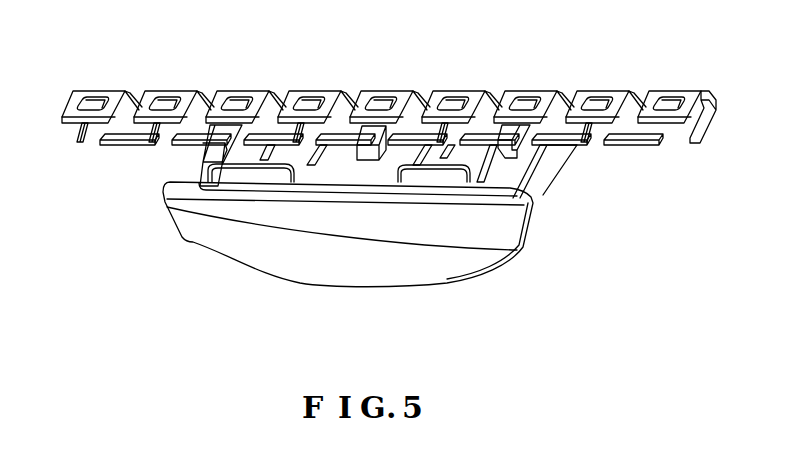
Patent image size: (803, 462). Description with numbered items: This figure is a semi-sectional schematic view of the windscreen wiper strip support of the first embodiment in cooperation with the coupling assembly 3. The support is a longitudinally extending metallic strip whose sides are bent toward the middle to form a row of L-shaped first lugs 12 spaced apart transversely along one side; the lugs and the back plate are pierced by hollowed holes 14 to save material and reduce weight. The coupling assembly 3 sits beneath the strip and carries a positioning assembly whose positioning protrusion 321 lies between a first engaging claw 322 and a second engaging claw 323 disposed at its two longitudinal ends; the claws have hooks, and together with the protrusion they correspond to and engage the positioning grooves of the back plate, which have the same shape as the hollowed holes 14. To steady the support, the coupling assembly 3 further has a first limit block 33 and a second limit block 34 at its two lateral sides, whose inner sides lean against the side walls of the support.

The coupling assembly 3 is at (401, 282).
The first lugs 12 is at (696, 91).
The hollowed holes 14 is at (455, 100).
The first limit block 33 is at (240, 183).
The second limit block 34 is at (283, 91).
The positioning protrusion 321 is at (382, 126).
The first engaging claw 322 is at (213, 142).
The second engaging claw 323 is at (519, 143).